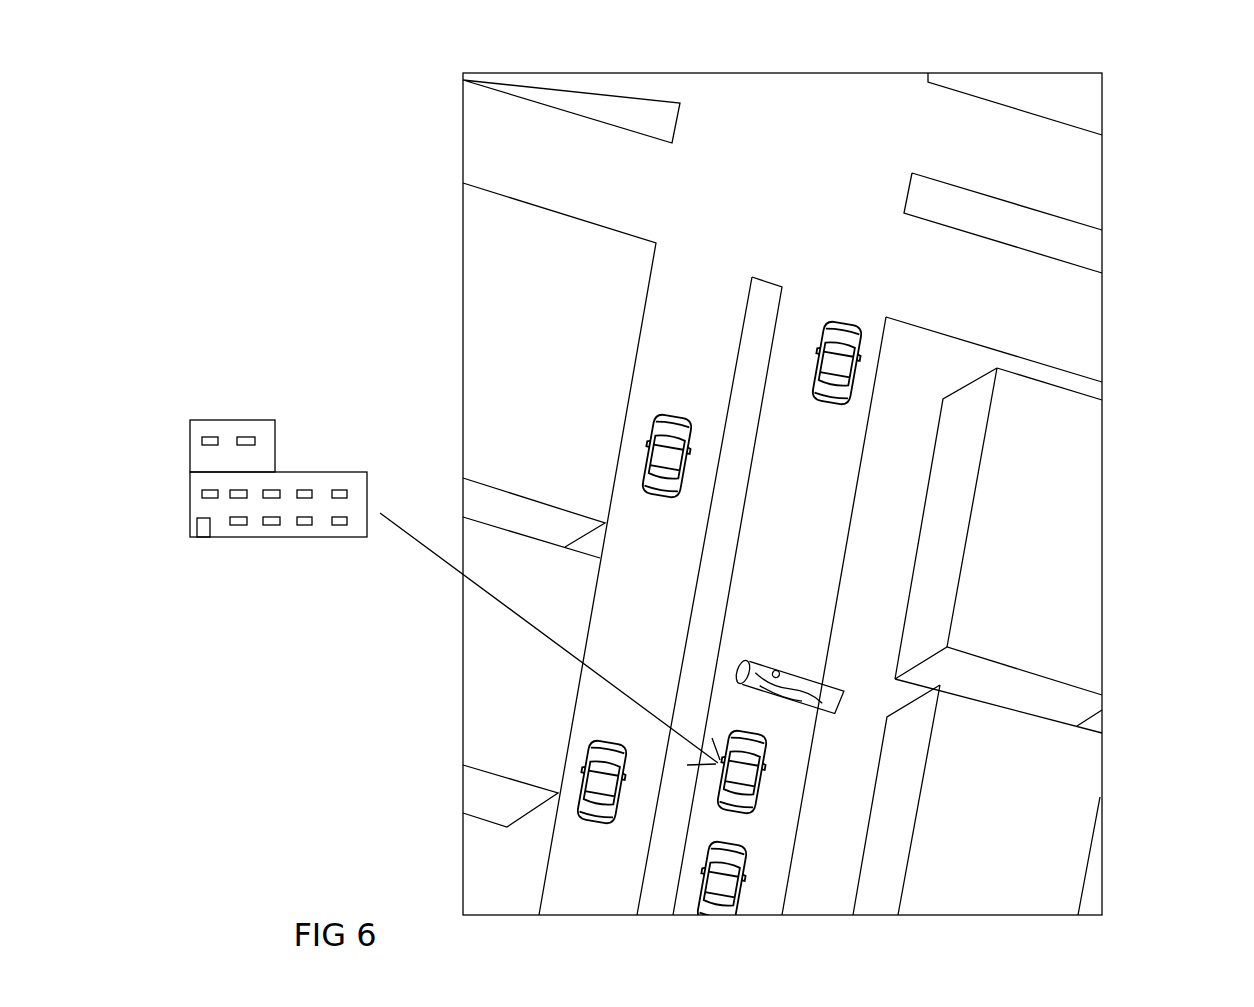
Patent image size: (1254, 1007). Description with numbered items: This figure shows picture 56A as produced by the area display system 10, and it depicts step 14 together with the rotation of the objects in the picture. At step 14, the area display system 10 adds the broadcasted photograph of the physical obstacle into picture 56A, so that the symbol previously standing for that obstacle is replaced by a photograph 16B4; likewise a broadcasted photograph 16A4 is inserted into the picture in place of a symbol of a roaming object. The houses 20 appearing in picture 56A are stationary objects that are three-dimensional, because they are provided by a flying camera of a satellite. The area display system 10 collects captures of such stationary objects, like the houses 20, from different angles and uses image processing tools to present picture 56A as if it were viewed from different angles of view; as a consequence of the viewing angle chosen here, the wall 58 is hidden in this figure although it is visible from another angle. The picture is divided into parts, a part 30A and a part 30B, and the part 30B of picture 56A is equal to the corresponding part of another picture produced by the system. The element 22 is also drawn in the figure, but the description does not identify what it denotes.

The area display system 10 is at (203, 515).
The step 14 is at (525, 625).
The stationary object 20 is at (482, 178).
The vehicle 22 is at (660, 417).
The picture 56A is at (773, 105).
The wall 58 is at (647, 322).
The broadcasted photograph 16A4 is at (743, 776).
The broadcasted photograph 16B4 is at (797, 678).
The part of picture 30A is at (1127, 593).
The part of picture 30B is at (1122, 605).